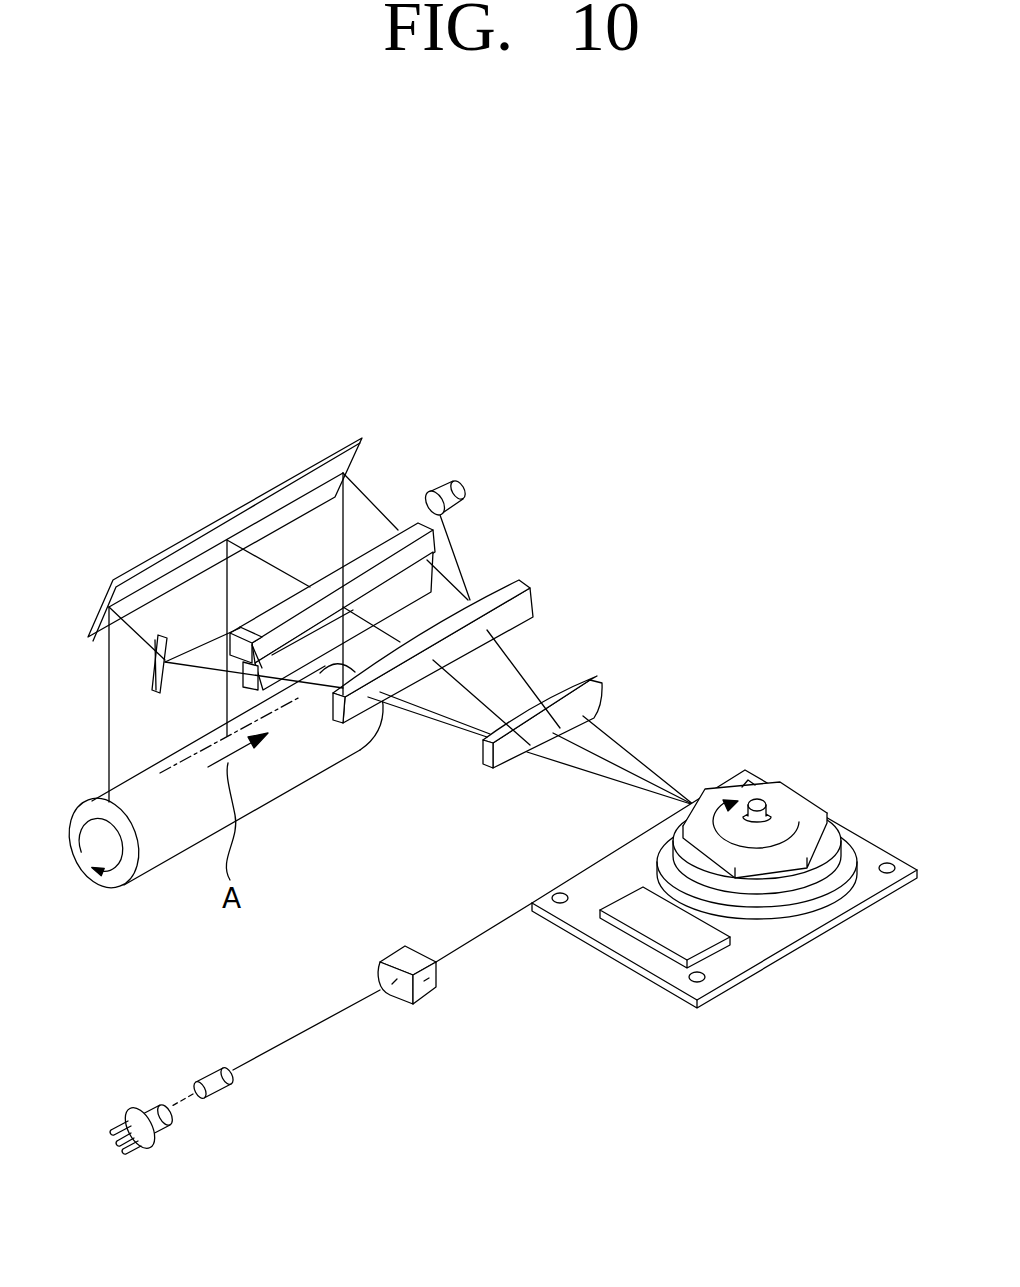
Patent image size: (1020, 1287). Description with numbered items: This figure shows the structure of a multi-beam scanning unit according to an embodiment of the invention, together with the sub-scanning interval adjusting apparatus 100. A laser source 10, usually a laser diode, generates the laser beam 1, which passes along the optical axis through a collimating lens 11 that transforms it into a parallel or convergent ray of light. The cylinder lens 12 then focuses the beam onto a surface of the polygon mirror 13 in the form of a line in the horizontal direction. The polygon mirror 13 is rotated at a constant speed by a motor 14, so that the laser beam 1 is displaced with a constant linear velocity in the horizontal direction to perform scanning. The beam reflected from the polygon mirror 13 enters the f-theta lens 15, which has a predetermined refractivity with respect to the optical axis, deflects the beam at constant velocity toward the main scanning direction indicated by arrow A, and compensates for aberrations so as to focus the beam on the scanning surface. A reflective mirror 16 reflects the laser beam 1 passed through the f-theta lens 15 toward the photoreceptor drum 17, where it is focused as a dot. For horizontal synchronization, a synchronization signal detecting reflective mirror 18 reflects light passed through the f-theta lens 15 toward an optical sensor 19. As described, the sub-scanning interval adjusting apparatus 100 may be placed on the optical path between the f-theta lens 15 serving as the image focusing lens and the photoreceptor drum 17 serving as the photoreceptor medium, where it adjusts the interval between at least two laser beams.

The sub-scanning interval adjusting apparatus 100 is at (482, 527).
The laser beam 1 is at (323, 1020).
The laser source 10 is at (157, 1102).
The collimating lens 11 is at (220, 1074).
The cylinder lens 12 is at (438, 988).
The polygon mirror 13 is at (783, 807).
The motor 14 is at (833, 833).
The f-theta lens 15 is at (602, 682).
The reflective mirror 16 is at (197, 523).
The photoreceptor drum 17 is at (90, 799).
The synchronization signal detecting reflective mirror 18 is at (163, 662).
The optical sensor 19 is at (443, 490).